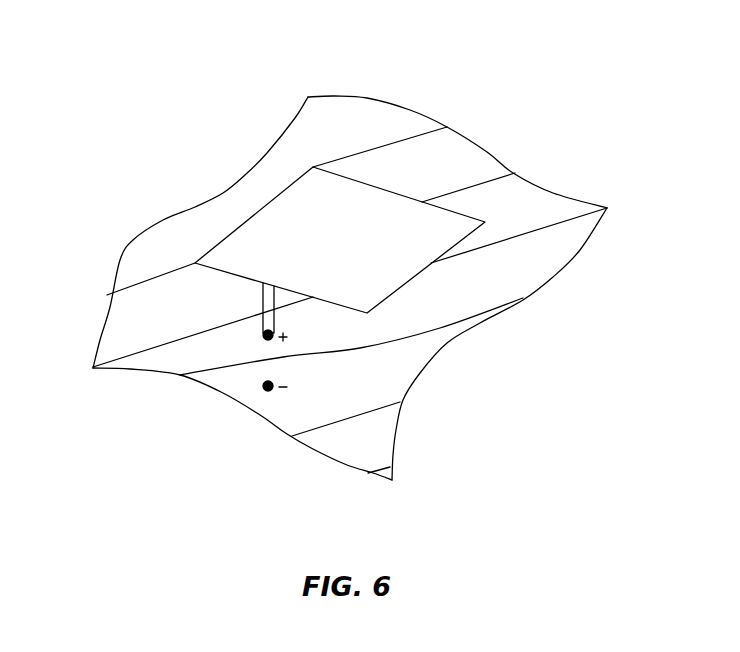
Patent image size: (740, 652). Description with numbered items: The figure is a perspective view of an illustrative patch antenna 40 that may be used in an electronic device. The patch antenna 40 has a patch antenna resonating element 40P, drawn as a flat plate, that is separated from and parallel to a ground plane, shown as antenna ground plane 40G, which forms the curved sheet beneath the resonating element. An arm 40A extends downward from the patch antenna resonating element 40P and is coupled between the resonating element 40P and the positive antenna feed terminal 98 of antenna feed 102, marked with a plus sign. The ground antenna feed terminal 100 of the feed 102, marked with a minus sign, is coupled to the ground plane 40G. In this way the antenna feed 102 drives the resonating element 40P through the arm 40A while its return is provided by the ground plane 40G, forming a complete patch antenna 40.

The patch antenna 40 is at (215, 168).
The patch antenna resonating element 40P is at (403, 220).
The antenna ground plane 40G is at (372, 460).
The arm 40A is at (265, 305).
The positive antenna feed terminal 98 is at (268, 340).
The ground antenna feed terminal 100 is at (268, 391).
The antenna feed 102 is at (318, 352).